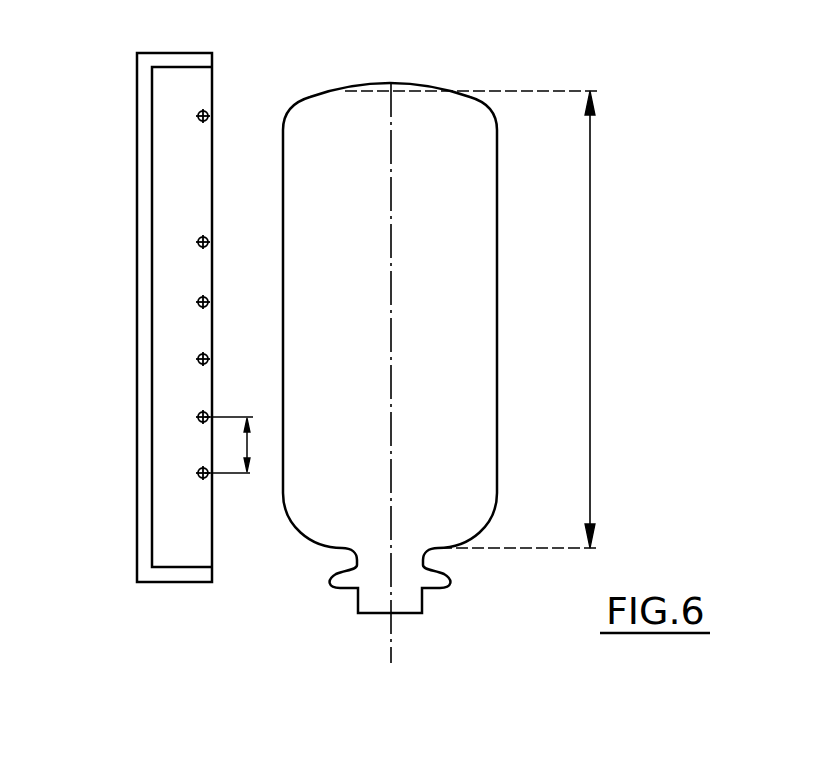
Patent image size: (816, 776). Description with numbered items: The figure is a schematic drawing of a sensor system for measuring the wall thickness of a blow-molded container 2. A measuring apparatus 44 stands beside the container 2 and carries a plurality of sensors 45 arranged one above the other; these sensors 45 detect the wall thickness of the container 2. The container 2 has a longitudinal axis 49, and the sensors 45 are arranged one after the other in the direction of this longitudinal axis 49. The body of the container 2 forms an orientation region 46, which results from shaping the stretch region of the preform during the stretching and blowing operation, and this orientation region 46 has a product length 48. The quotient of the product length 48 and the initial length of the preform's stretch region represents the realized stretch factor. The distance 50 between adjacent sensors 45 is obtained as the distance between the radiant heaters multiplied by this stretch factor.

The container 2 is at (475, 256).
The measuring apparatus 44 is at (137, 91).
The sensors 45 is at (205, 114).
The orientation region 46 is at (608, 208).
The product length 48 is at (590, 307).
The longitudinal axis 49 is at (391, 624).
The distance between the sensors 50 is at (248, 447).